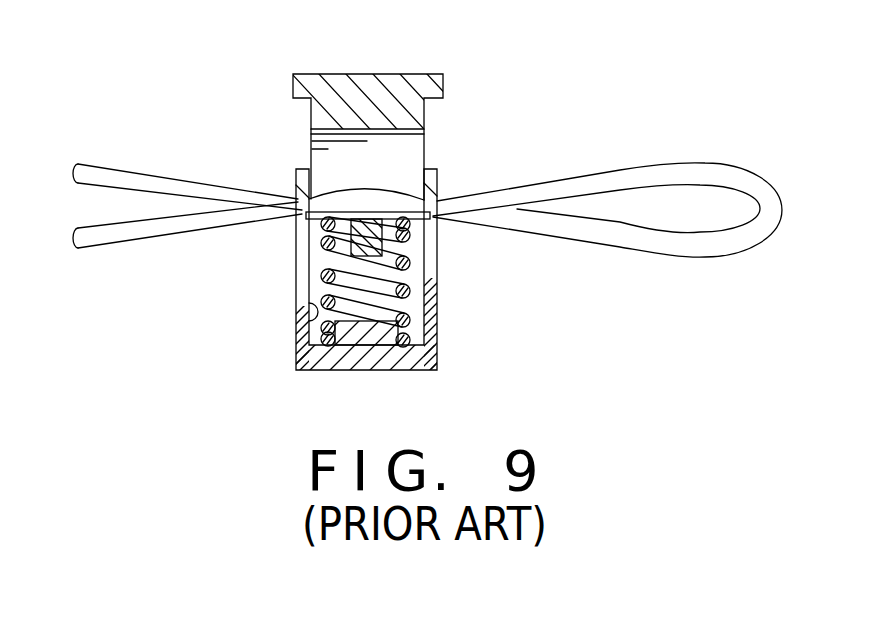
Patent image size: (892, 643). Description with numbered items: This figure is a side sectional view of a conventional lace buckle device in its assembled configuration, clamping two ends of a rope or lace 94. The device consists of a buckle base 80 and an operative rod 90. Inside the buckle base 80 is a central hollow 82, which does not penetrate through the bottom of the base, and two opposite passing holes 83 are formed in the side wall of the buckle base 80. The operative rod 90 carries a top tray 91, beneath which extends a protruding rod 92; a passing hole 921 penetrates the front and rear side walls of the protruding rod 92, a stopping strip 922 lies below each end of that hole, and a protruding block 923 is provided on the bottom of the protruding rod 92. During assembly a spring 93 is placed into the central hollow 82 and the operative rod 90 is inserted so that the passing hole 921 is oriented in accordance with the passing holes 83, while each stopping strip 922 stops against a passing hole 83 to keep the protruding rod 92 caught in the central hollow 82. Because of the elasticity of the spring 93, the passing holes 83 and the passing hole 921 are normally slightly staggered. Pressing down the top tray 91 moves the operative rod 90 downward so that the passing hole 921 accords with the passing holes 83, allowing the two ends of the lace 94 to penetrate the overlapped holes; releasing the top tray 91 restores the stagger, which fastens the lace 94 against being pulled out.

The buckle base 80 is at (405, 274).
The central hollow 82 is at (312, 325).
The passing holes 83 is at (300, 254).
The operative rod 90 is at (401, 114).
The top tray 91 is at (445, 79).
The protruding rod 92 is at (319, 109).
The passing hole 921 is at (414, 142).
The stopping strip 922 is at (432, 217).
The protruding block 923 is at (362, 243).
The spring 93 is at (405, 291).
The rope or lace 94 is at (710, 247).